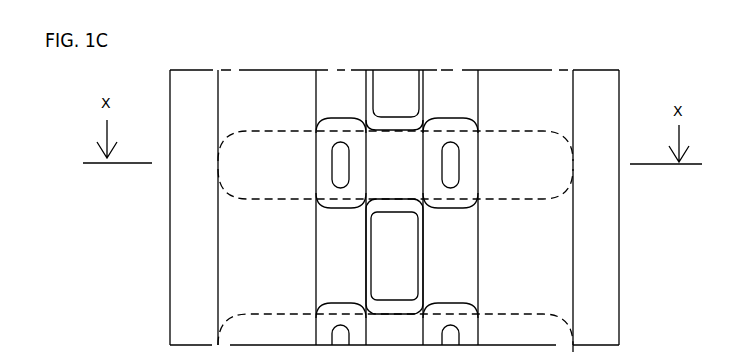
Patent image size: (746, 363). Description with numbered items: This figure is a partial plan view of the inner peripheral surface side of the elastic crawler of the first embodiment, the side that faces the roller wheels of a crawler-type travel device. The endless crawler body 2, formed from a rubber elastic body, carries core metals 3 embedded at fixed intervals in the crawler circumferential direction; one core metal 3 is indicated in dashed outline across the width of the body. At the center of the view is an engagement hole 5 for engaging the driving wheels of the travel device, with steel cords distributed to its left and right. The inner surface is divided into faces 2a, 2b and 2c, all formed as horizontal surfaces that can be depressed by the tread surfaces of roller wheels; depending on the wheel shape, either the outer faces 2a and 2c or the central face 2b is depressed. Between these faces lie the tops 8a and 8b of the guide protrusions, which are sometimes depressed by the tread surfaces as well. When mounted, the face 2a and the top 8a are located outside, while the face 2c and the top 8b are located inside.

The crawler body 2 is at (184, 95).
The face 2a is at (272, 85).
The face 2b is at (388, 158).
The face 2c is at (508, 103).
The core metal 3 is at (256, 155).
The engagement hole 5 is at (395, 250).
The top 8a is at (342, 142).
The top 8b is at (453, 142).